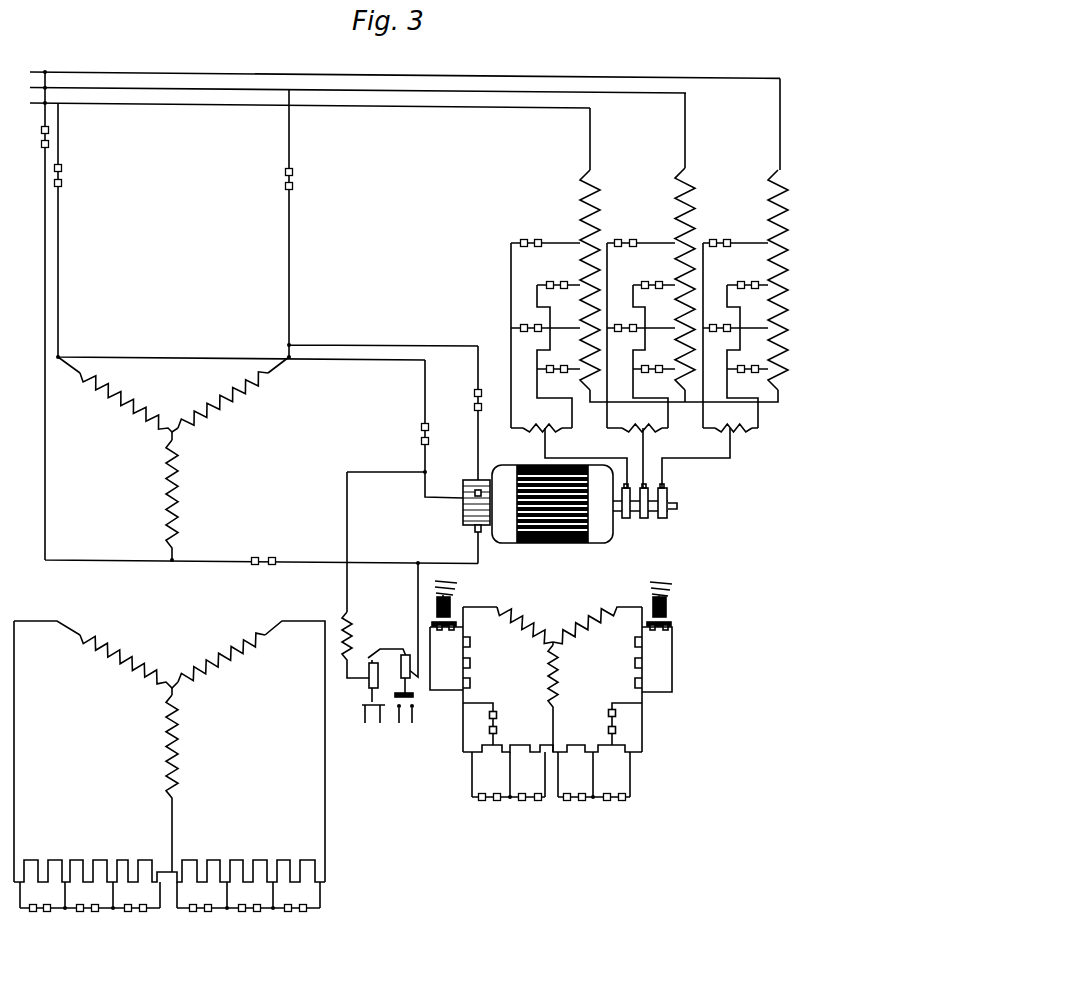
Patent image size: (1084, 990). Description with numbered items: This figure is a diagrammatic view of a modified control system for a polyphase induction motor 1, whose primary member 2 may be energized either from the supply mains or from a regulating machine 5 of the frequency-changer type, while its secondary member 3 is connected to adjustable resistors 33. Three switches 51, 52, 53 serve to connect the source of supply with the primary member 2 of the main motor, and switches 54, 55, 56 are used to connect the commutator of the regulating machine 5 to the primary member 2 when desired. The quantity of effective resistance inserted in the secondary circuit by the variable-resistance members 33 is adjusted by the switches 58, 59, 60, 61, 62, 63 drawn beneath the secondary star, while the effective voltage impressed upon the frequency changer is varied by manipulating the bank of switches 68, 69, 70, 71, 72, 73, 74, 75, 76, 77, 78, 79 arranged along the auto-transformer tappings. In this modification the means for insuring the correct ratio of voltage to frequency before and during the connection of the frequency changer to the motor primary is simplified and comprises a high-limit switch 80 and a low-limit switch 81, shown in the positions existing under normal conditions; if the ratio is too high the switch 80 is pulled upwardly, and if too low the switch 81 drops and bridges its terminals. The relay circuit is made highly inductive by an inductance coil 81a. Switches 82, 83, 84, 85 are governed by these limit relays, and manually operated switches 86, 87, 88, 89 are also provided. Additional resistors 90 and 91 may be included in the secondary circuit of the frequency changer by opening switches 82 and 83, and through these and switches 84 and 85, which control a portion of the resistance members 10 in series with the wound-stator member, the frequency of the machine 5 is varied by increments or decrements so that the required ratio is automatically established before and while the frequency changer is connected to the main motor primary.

The induction motor 1 is at (398, 324).
The primary member 2 is at (180, 447).
The secondary member 3 is at (158, 672).
The regulating machine 5 is at (532, 465).
The resistance members 10 is at (585, 757).
The adjustable resistors 33 is at (258, 863).
The switch 51 is at (41, 136).
The switch 52 is at (62, 178).
The switch 53 is at (285, 174).
The switch 54 is at (264, 552).
The switch 55 is at (420, 436).
The switch 56 is at (473, 403).
The switch 58 is at (40, 920).
The switch 59 is at (295, 920).
The switch 60 is at (87, 920).
The switch 61 is at (249, 920).
The switch 62 is at (135, 920).
The switch 63 is at (200, 920).
The switch 68 is at (527, 235).
The switch 69 is at (623, 235).
The switch 70 is at (719, 235).
The switch 71 is at (557, 277).
The switch 72 is at (652, 277).
The switch 73 is at (747, 277).
The switch 74 is at (527, 320).
The switch 75 is at (623, 320).
The switch 76 is at (719, 320).
The switch 77 is at (557, 361).
The switch 78 is at (652, 361).
The switch 79 is at (747, 361).
The high-limit switch 80 is at (367, 683).
The low-limit switch 81 is at (410, 681).
The inductance coil 81a is at (352, 617).
The switch 82 is at (450, 582).
The switch 83 is at (672, 592).
The switch 84 is at (497, 722).
The switch 85 is at (608, 722).
The manually operated switch 86 is at (488, 810).
The manually operated switch 87 is at (614, 810).
The manually operated switch 88 is at (530, 810).
The manually operated switch 89 is at (574, 810).
The additional resistor 90 is at (473, 660).
The additional resistor 91 is at (635, 658).